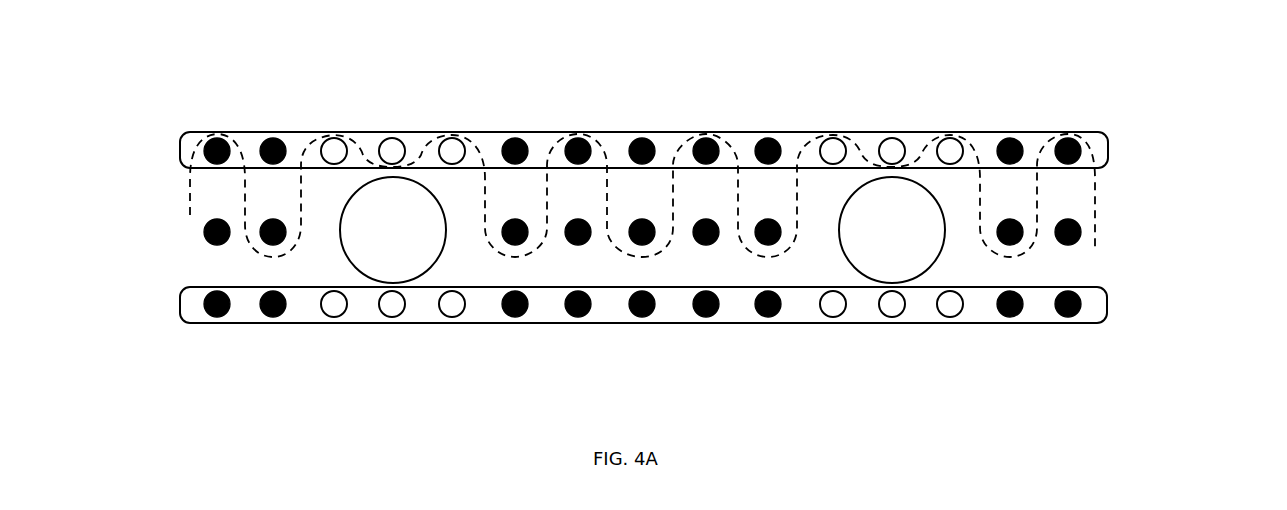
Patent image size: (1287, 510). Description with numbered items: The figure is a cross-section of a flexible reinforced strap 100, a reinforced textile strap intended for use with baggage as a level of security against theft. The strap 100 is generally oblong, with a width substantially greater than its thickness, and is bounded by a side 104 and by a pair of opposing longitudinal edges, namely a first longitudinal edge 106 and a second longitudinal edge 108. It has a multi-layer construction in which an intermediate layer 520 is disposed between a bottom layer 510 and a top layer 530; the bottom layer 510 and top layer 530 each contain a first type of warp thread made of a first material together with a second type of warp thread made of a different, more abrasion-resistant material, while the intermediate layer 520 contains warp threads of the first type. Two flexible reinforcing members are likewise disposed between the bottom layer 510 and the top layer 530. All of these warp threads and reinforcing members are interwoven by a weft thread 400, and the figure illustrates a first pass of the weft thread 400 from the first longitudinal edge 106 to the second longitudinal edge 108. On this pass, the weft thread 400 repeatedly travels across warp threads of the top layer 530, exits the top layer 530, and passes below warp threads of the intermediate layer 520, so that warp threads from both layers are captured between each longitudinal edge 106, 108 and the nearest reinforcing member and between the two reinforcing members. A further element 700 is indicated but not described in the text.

The flexible reinforced strap 100 is at (1185, 135).
The side 104 is at (782, 405).
The first longitudinal edge 106 is at (1127, 245).
The second longitudinal edge 108 is at (187, 257).
The weft thread 400 is at (1103, 212).
The bottom layer 510 is at (173, 300).
The intermediate layer 520 is at (170, 228).
The top layer 530 is at (175, 152).
The fabric structure 700 is at (1100, 265).